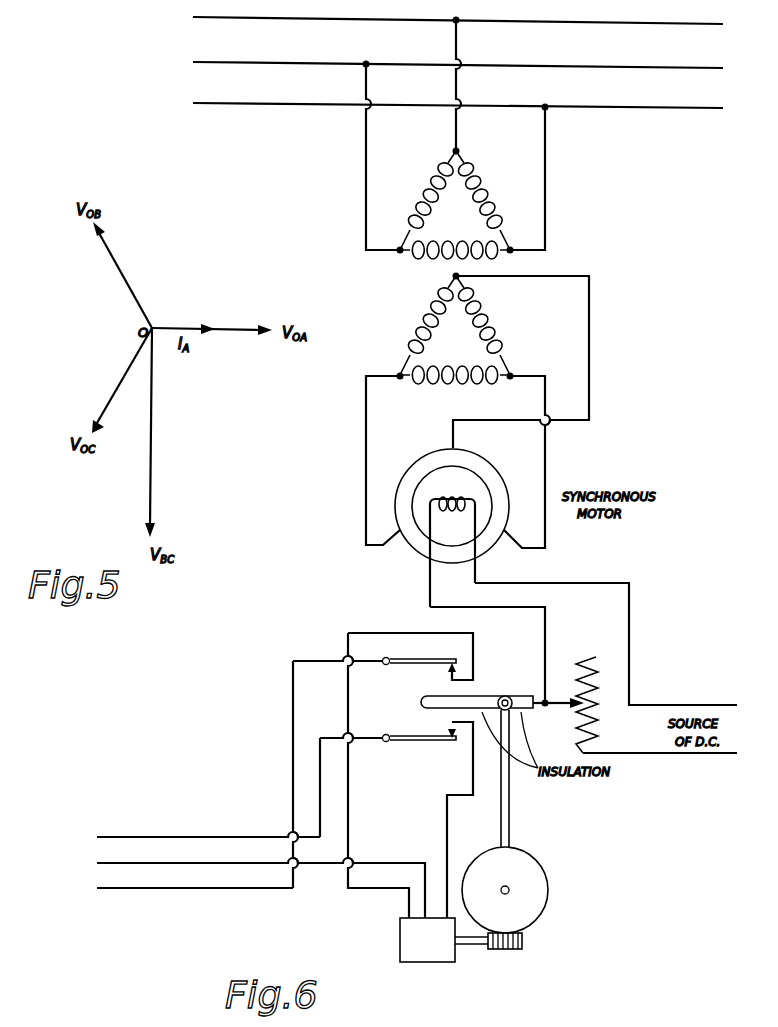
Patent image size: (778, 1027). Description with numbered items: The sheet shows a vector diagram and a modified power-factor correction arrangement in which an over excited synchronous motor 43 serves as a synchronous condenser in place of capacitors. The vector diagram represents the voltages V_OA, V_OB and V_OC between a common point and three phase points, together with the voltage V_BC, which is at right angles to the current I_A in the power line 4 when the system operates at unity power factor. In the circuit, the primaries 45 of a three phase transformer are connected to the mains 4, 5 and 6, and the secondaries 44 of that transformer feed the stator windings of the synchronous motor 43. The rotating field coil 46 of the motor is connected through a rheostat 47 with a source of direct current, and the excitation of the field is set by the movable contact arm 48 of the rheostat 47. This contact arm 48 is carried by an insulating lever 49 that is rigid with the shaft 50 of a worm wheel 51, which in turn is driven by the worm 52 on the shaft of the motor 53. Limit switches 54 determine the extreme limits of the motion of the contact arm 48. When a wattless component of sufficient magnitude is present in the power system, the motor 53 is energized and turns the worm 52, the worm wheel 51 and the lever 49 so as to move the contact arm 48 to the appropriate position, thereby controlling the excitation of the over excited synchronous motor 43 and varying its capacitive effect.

The power line 4 is at (600, 70).
The main 5 is at (657, 27).
The main 6 is at (637, 112).
The over excited synchronous motor 43 is at (412, 460).
The secondaries 44 is at (501, 333).
The primaries 45 is at (491, 179).
The rotating field coil 46 is at (457, 495).
The rheostat 47 is at (597, 659).
The movable contact arm 48 is at (556, 699).
The insulating lever 49 is at (518, 694).
The shaft 50 is at (511, 825).
The worm wheel 51 is at (538, 878).
The worm 52 is at (508, 952).
The motor 53 is at (437, 962).
The limit switches 54 is at (432, 666).